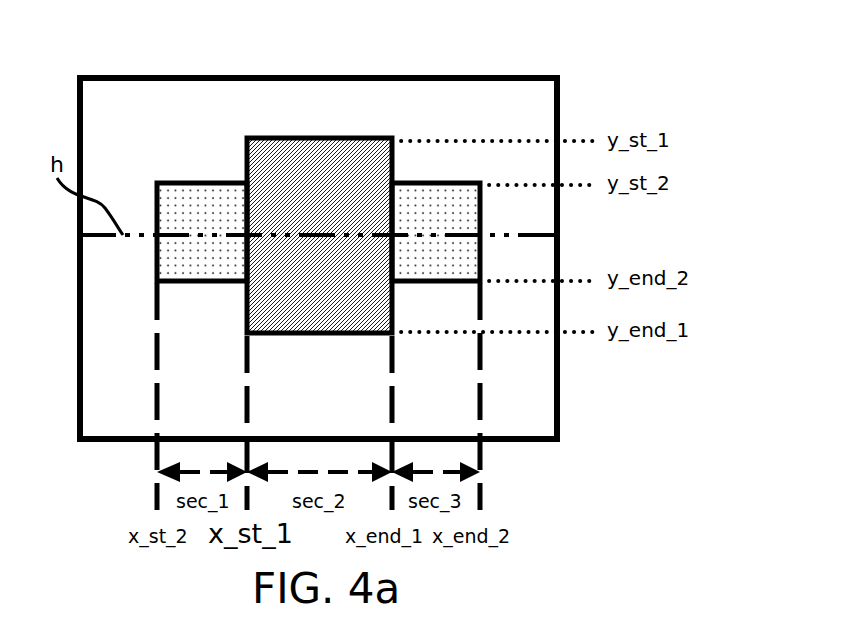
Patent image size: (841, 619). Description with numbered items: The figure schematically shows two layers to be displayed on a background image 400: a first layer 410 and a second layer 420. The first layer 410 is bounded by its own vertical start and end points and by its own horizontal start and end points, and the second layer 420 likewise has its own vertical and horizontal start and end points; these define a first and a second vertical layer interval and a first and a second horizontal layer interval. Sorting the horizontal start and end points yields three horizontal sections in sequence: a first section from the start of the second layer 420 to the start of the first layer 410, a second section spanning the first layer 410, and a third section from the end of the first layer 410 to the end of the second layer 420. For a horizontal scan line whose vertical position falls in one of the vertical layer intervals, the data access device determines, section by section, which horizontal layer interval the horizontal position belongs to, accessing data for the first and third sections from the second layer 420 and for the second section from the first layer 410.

The background image 400 is at (123, 78).
The first layer 410 is at (345, 138).
The second layer 420 is at (207, 200).